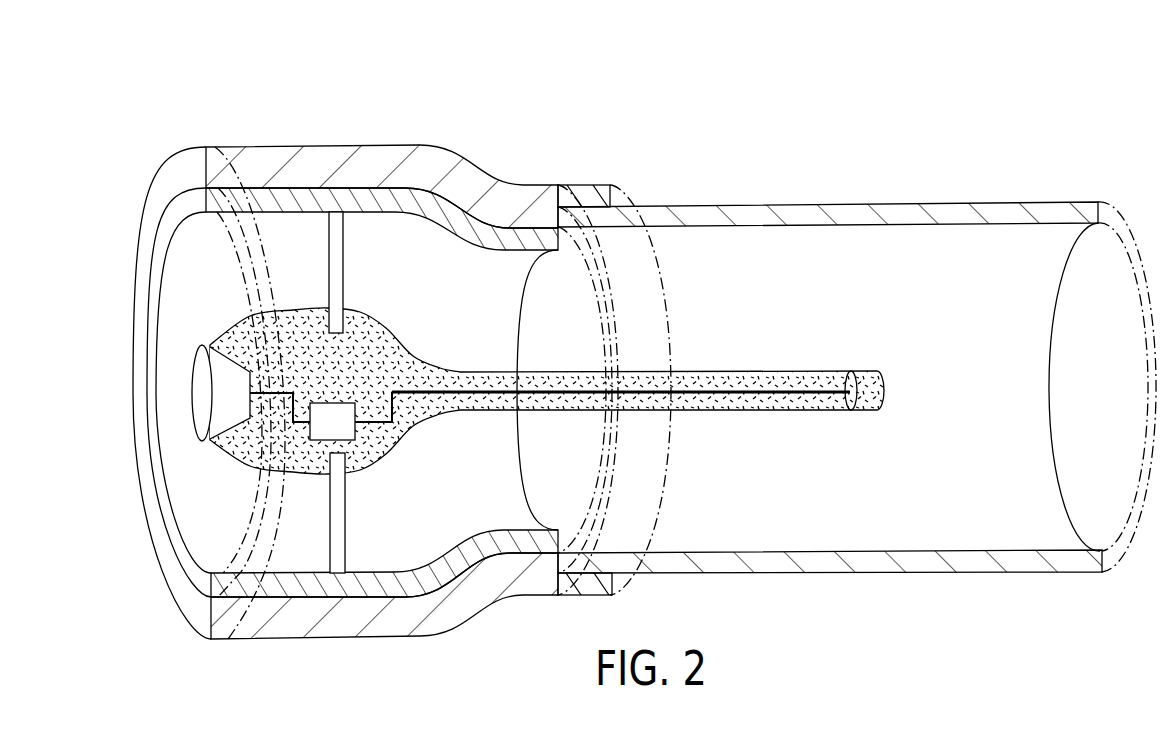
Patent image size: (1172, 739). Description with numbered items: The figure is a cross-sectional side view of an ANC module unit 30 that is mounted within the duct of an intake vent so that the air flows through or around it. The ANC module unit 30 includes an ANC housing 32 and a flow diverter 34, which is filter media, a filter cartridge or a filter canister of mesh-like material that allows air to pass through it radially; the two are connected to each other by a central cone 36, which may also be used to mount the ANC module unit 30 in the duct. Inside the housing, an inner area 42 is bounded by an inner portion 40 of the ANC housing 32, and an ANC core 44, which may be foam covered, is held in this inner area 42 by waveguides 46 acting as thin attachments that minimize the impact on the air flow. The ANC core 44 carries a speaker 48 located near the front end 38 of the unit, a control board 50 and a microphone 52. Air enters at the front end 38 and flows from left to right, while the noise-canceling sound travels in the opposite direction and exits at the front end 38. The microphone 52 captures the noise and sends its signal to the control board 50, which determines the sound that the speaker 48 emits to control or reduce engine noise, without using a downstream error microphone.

The ANC module unit 30 is at (238, 88).
The ANC housing 32 is at (297, 147).
The flow diverter 34 is at (845, 202).
The central cone 36 is at (578, 185).
The front end 38 is at (176, 243).
The inner portion 40 is at (364, 189).
The inner area 42 is at (487, 291).
The ANC core 44 is at (380, 334).
The waveguides 46 is at (344, 267).
The speaker 48 is at (203, 372).
The control board 50 is at (360, 433).
The microphone 52 is at (863, 368).